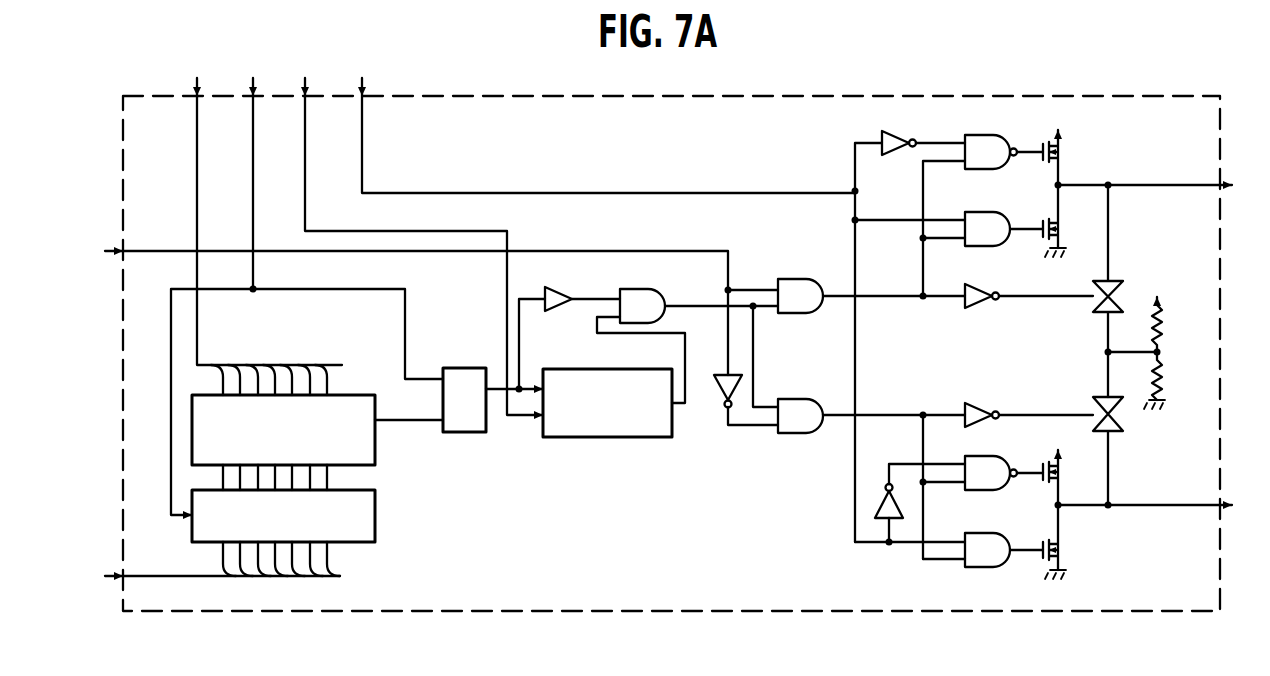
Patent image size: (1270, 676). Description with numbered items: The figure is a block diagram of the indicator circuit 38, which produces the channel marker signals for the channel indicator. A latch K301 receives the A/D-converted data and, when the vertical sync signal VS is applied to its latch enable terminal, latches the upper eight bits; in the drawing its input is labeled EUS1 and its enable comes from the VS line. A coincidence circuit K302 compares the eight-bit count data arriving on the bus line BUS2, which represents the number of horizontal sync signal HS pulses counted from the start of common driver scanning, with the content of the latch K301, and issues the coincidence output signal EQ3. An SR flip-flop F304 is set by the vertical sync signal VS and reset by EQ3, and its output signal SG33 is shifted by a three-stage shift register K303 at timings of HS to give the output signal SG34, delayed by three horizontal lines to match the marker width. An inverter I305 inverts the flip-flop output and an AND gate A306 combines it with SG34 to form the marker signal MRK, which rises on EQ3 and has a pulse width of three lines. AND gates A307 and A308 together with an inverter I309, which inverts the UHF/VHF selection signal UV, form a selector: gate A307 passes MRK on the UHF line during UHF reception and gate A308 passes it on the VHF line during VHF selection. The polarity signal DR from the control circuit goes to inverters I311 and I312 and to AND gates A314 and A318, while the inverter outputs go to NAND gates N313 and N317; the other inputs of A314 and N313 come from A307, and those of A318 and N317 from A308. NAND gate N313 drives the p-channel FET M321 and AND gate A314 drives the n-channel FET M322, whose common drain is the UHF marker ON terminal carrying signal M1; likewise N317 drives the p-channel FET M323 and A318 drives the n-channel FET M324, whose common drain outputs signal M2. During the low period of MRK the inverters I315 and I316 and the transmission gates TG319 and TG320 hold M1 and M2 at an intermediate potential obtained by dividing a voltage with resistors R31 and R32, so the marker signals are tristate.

The indicator circuit 38 is at (672, 612).
The bus line BUS2 is at (197, 186).
The vertical sync signal VS is at (307, 284).
The horizontal sync signal HS is at (416, 234).
The polarity signal DR is at (598, 121).
The UHF/VHF selection signal UV is at (424, 304).
The enable signal EUS1 is at (222, 561).
The coincidence circuit K302 is at (375, 440).
The latch K301 is at (375, 513).
The output signal EQ3 is at (409, 405).
The SR flip-flop F304 is at (482, 379).
The output signal SG33 is at (522, 379).
The shift register K303 is at (593, 369).
The output signal SG34 is at (687, 410).
The inverter I305 is at (546, 299).
The AND gate A306 is at (656, 285).
The marker signal MRK is at (721, 343).
The AND gate A307 is at (830, 276).
The UHF output line UHF is at (933, 319).
The AND gate A308 is at (830, 396).
The VHF output line VHF is at (933, 441).
The inverter I309 is at (722, 408).
The inverter I311 is at (893, 158).
The NAND gate N313 is at (1010, 141).
The AND gate A314 is at (1010, 218).
The inverter I315 is at (970, 294).
The inverter I316 is at (970, 421).
The inverter I312 is at (878, 500).
The NAND gate N317 is at (1009, 488).
The AND gate A318 is at (1009, 565).
The p-channel FET M321 is at (1062, 153).
The n-channel FET M322 is at (1062, 229).
The p-channel FET M323 is at (1062, 473).
The n-channel FET M324 is at (1062, 550).
The channel marker signal M1 is at (1144, 172).
The channel marker signal M2 is at (1144, 492).
The transmission gate TG319 is at (1097, 301).
The transmission gate TG320 is at (1095, 399).
The resistor R31 is at (1160, 313).
The resistor R32 is at (1179, 380).